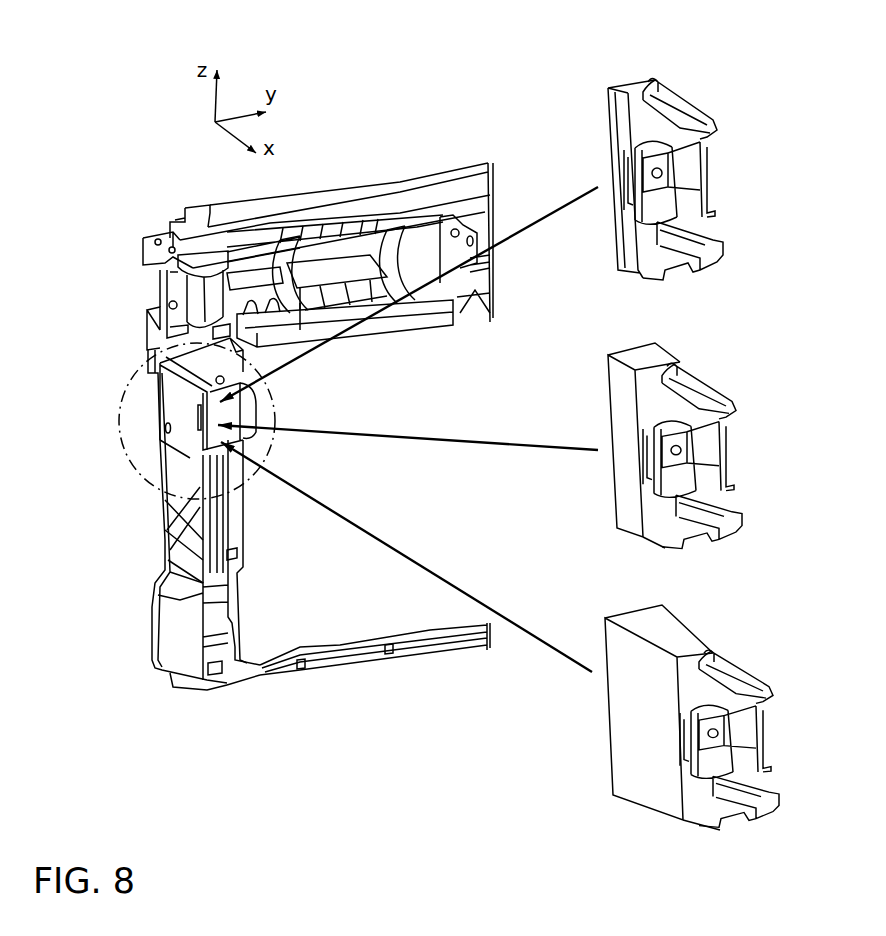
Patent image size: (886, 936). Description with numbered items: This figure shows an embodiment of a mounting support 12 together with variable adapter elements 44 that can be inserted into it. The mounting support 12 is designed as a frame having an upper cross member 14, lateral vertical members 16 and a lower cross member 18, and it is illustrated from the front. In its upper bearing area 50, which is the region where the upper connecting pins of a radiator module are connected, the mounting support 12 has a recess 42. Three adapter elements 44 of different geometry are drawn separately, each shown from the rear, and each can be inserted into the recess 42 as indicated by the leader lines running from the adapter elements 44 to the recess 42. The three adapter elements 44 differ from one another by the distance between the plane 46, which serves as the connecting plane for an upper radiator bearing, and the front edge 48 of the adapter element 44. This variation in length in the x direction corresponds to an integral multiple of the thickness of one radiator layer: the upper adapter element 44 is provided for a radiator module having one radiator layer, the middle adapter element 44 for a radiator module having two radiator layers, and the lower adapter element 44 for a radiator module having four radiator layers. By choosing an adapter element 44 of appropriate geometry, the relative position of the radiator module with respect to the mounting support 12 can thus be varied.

The mounting support 12 is at (452, 158).
The upper cross member 14 is at (357, 210).
The lateral vertical member 16 is at (183, 512).
The lower cross member 18 is at (360, 656).
The recess 42 is at (214, 418).
The adapter element 44 is at (692, 185).
The plane 46 is at (655, 82).
The front edge 48 is at (657, 343).
The upper bearing area 50 is at (137, 373).